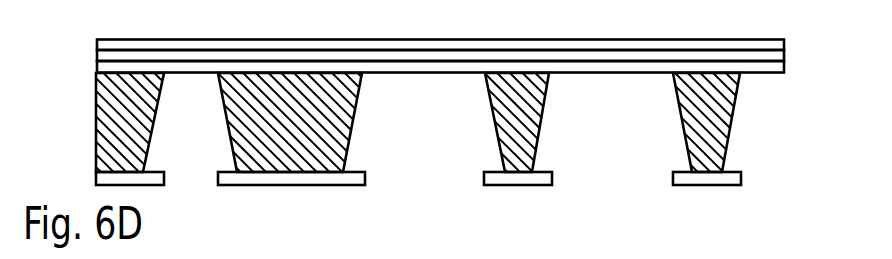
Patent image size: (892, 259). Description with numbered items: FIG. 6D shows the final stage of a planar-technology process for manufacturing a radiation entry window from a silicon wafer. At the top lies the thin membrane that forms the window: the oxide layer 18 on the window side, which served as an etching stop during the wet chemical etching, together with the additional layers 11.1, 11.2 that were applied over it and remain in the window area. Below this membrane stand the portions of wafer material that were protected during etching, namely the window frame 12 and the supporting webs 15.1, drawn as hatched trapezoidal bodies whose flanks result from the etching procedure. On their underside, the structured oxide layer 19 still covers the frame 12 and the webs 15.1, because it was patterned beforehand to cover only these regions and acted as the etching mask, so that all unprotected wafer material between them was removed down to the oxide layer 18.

The additional layer 11.1 is at (707, 45).
The additional layer 11.2 is at (477, 57).
The oxide layer 18 is at (237, 68).
The window frame 12 is at (328, 117).
The supporting web 15.1 is at (523, 118).
The oxide layer 19 is at (507, 178).